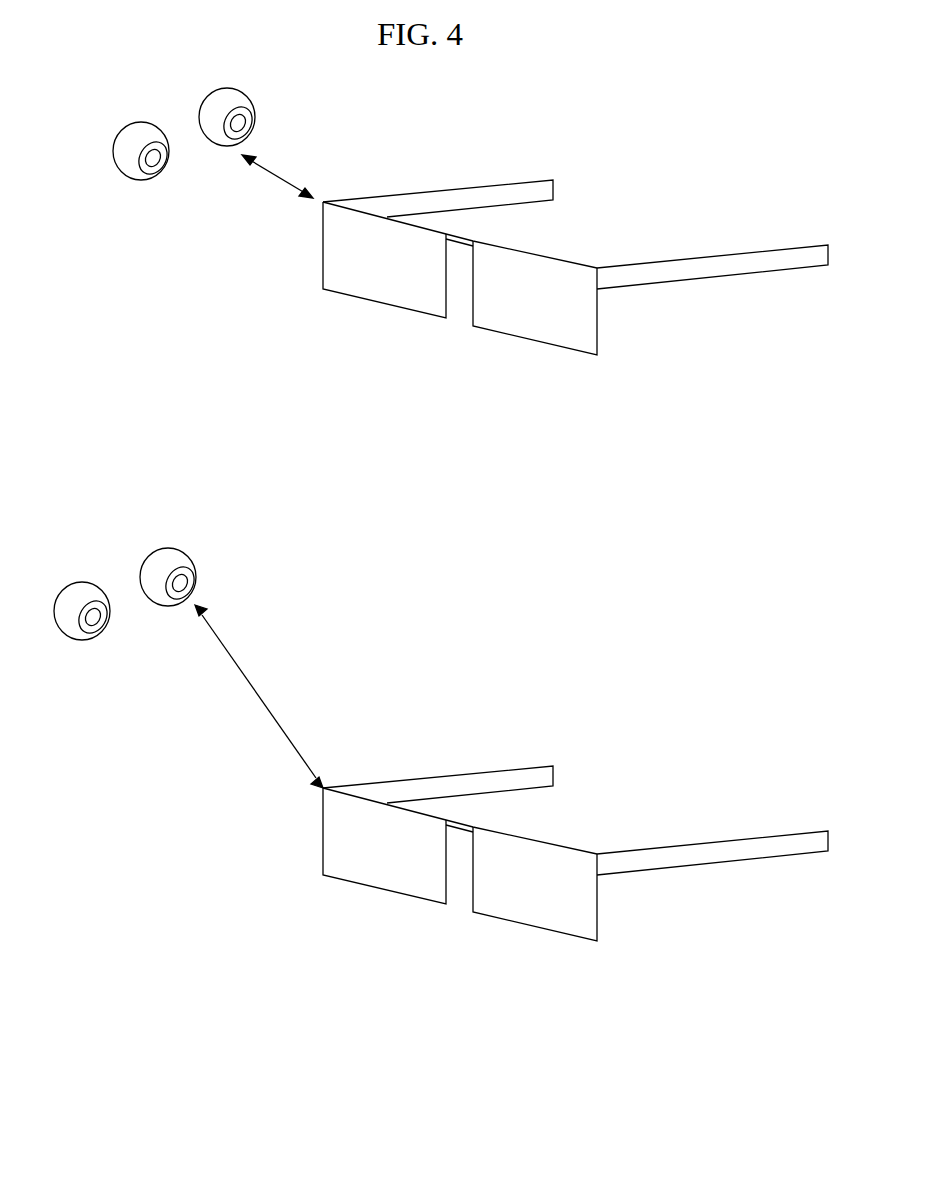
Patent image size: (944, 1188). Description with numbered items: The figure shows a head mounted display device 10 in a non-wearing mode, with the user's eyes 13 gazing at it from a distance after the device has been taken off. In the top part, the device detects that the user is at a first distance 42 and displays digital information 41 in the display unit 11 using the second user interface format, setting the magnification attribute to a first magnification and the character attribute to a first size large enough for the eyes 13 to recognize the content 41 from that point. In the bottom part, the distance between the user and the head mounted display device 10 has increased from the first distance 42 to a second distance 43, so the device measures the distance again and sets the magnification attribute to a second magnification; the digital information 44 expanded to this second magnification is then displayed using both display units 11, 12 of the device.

The head mounted display device 10 is at (813, 257).
The display unit 11 is at (538, 325).
The display unit 12 is at (390, 290).
The eyes 13 is at (213, 108).
The digital information 41 is at (586, 283).
The first distance 42 is at (280, 170).
The second distance 43 is at (262, 696).
The digital information 44 is at (342, 838).